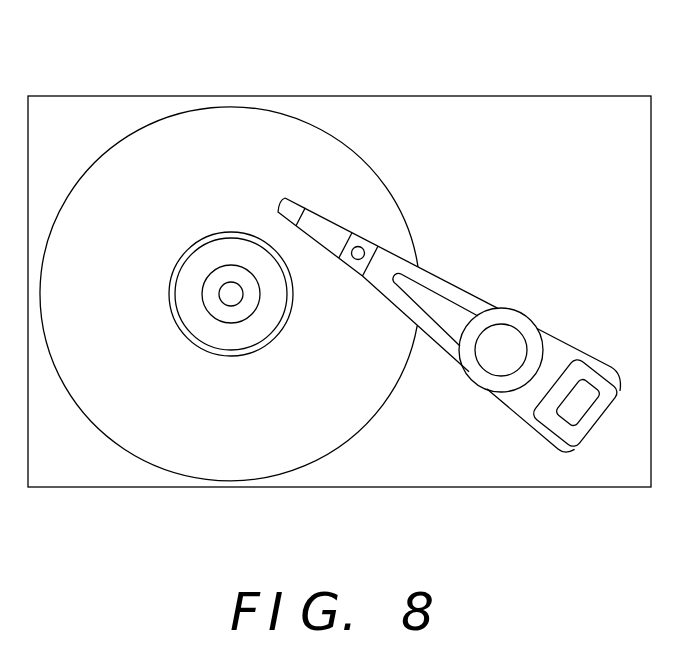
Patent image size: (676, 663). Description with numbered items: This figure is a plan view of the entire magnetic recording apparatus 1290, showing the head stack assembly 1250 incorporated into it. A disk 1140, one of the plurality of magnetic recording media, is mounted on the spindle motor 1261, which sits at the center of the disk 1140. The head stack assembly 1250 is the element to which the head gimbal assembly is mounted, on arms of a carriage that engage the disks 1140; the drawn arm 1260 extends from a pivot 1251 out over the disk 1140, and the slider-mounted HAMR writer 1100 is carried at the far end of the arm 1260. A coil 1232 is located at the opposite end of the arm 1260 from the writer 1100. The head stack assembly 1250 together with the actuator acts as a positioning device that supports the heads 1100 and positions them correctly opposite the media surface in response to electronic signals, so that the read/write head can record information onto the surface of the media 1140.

The magnetic recording apparatus 1290 is at (374, 87).
The slider-mounted HAMR writer 1100 is at (297, 196).
The pivot bearing 1251 is at (504, 309).
The disks 1140 is at (160, 468).
The spindle motor 1261 is at (231, 306).
The actuator arm 1260 is at (458, 366).
The head stack assembly 1250 is at (513, 409).
The voice coil 1232 is at (599, 412).